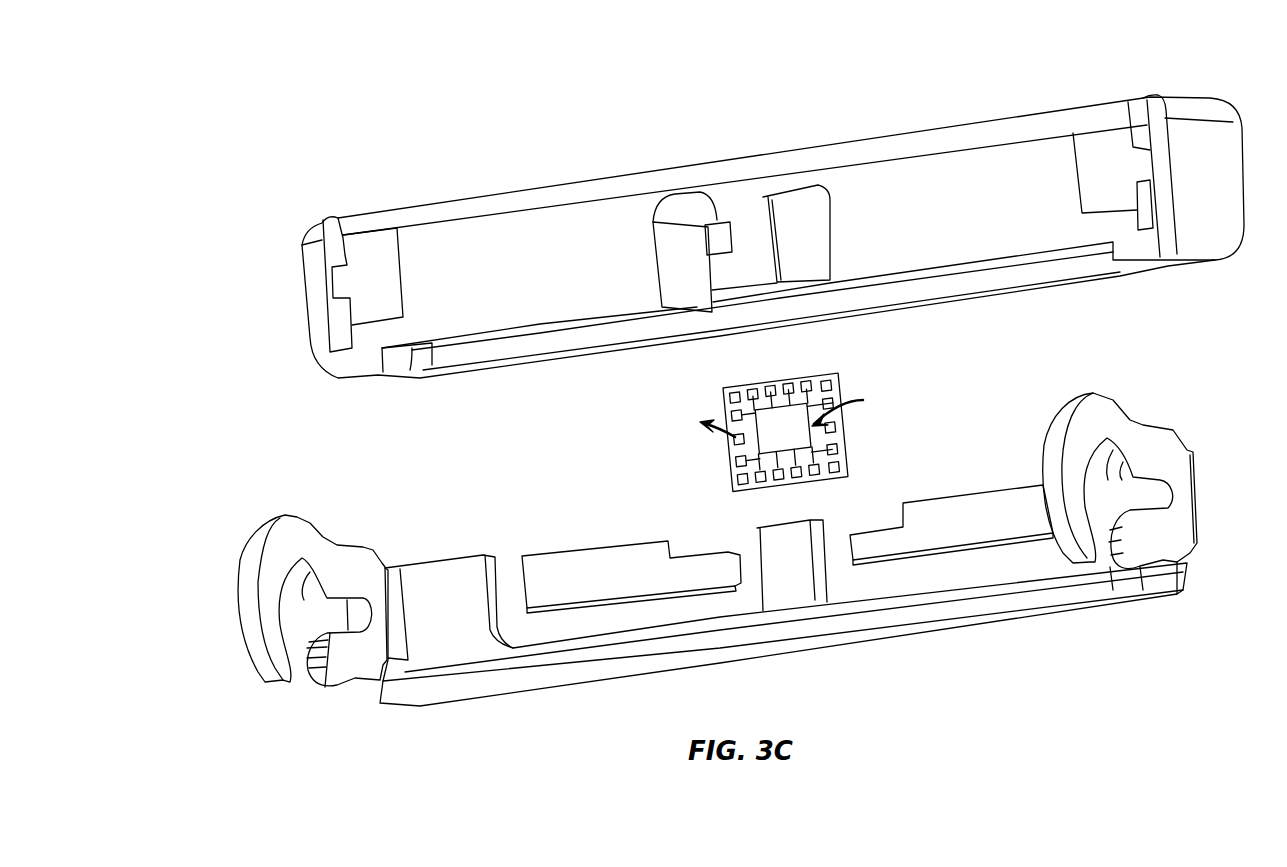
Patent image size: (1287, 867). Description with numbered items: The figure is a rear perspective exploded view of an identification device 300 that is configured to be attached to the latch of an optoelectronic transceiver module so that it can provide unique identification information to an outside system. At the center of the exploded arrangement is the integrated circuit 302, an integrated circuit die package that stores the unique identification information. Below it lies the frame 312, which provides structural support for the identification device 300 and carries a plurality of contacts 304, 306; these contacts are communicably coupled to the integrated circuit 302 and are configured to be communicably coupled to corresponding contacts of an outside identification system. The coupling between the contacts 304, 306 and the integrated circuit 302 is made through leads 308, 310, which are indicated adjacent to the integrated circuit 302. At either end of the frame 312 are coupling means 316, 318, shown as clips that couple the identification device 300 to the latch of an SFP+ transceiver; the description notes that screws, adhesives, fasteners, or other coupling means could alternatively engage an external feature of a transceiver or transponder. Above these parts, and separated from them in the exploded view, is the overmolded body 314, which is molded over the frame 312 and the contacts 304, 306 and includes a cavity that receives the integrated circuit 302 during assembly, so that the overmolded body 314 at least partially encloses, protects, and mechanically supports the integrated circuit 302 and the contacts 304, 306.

The identification device 300 is at (413, 112).
The integrated circuit 302 is at (787, 378).
The contact 304 is at (974, 488).
The contact 306 is at (606, 543).
The lead 308 is at (858, 393).
The lead 310 is at (699, 432).
The frame 312 is at (680, 645).
The overmolded body 314 is at (751, 150).
The coupling means 316 is at (1094, 396).
The coupling means 318 is at (278, 512).